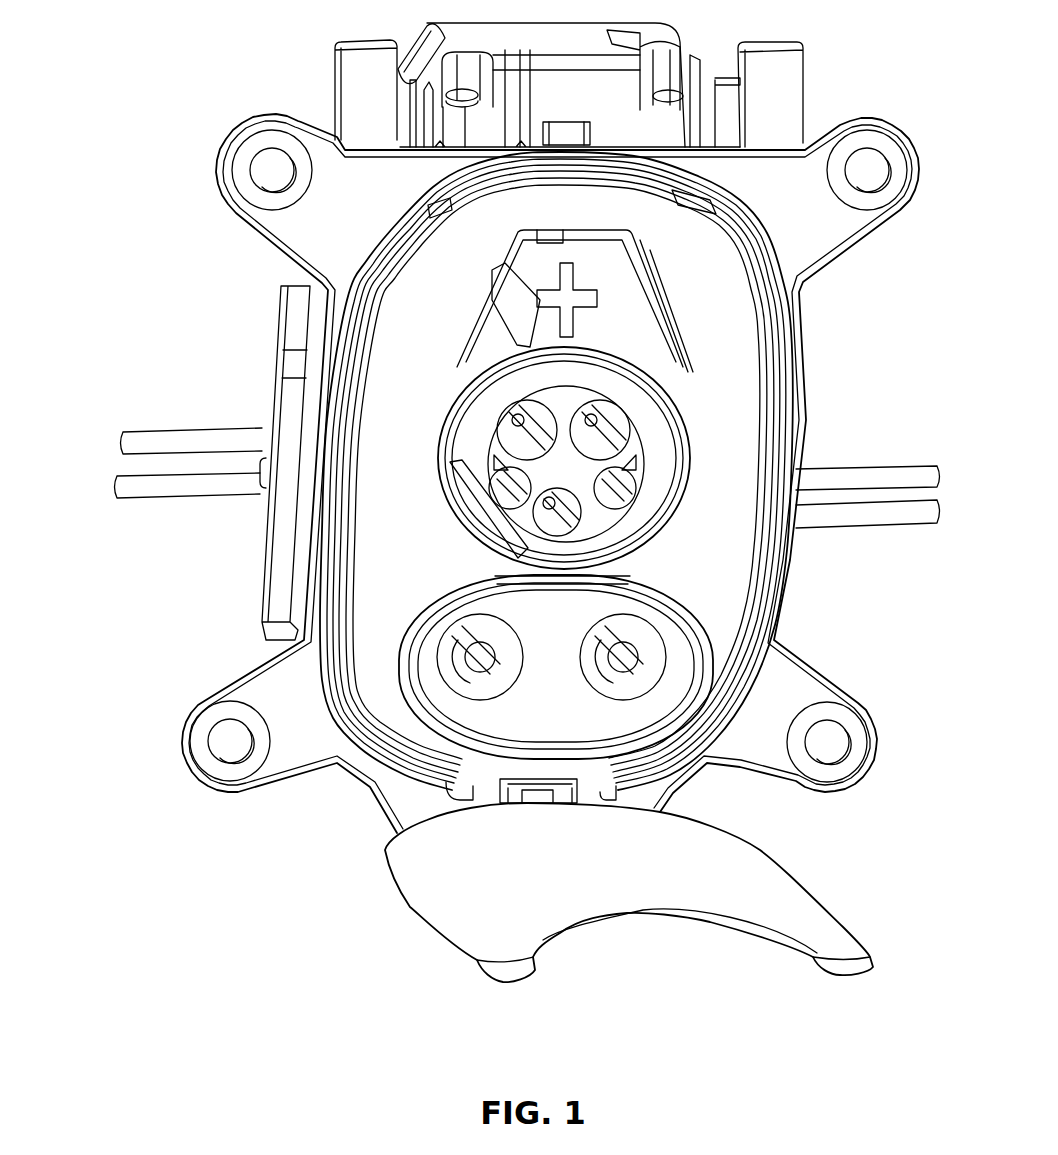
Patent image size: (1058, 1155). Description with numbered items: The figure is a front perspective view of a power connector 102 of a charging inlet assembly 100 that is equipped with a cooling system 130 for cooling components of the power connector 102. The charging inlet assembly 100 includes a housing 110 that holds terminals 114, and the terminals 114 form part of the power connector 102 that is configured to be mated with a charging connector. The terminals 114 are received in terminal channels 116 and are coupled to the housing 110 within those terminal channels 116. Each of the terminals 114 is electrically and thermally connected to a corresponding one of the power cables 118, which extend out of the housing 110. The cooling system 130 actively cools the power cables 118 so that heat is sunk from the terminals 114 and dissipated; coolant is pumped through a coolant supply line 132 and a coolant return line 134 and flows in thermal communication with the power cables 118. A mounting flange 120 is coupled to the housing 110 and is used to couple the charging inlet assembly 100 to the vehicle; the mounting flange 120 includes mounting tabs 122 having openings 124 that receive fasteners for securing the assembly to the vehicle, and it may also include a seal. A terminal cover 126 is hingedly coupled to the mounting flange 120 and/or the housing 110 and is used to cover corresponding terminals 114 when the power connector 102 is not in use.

The charging inlet assembly 100 is at (850, 50).
The power connector 102 is at (573, 712).
The housing 110 is at (715, 292).
The terminals 114 is at (480, 657).
The terminal channels 116 is at (477, 697).
The power cables 118 is at (908, 466).
The mounting flange 120 is at (316, 215).
The mounting tabs 122 is at (800, 697).
The openings 124 is at (833, 754).
The terminal cover 126 is at (793, 897).
The cooling system 130 is at (106, 470).
The coolant supply line 132 is at (195, 428).
The coolant return line 134 is at (205, 500).